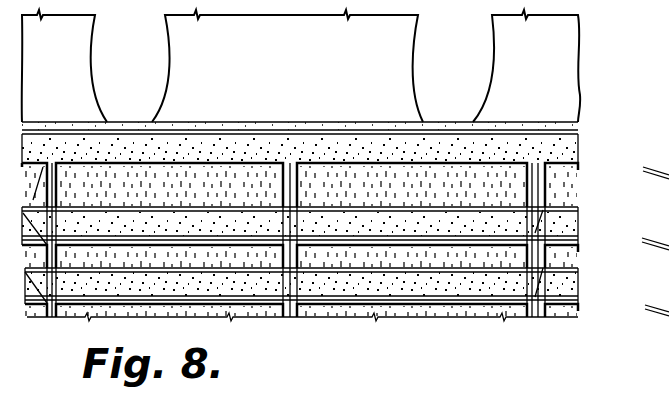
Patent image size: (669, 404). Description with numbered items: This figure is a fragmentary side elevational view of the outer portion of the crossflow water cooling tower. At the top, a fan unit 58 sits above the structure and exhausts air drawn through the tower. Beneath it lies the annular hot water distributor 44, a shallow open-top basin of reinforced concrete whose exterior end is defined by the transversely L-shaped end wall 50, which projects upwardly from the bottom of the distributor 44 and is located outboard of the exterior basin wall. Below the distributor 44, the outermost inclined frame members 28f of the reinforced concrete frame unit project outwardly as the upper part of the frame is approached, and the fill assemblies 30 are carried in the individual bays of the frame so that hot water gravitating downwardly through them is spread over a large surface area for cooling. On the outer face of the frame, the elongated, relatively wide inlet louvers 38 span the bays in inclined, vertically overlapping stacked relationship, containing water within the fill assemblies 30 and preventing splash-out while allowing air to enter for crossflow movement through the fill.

The fan unit 58 is at (571, 12).
The annular hot water distributor 44 is at (444, 132).
The L-shaped end wall 50 is at (565, 135).
The inclined frame member 28f is at (298, 186).
The fill assembly 30 is at (470, 184).
The inlet louver 38 is at (563, 221).